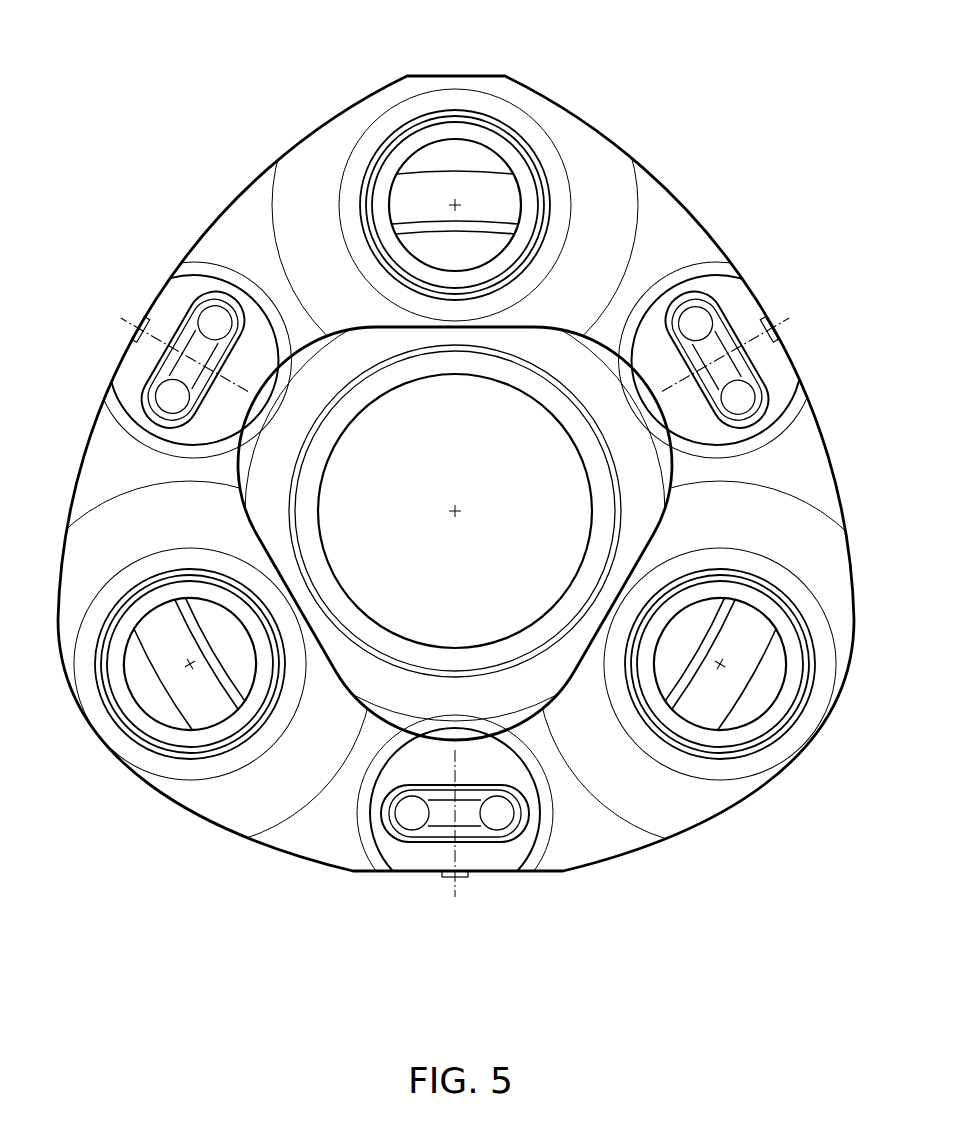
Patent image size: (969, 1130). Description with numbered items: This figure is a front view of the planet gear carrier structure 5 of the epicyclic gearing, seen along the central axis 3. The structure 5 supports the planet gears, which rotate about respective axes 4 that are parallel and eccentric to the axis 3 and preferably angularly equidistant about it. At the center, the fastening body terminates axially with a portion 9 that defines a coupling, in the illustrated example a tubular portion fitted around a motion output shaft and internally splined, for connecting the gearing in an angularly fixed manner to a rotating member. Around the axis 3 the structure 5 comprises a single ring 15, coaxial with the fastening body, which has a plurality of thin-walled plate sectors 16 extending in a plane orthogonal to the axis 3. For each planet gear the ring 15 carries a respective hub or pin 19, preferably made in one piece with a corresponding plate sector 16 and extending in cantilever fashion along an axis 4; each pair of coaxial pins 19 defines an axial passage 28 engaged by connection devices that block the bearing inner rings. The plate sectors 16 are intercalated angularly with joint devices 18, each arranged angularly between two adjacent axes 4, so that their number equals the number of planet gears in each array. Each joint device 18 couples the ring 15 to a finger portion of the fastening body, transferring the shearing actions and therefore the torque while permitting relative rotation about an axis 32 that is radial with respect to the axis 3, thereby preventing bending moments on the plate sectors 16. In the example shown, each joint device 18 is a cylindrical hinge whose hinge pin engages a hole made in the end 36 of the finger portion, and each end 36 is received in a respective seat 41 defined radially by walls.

The axis 3 is at (455, 513).
The axes 4 is at (458, 198).
The planet gear carrier structure 5 is at (548, 356).
The portion 9 is at (533, 392).
The ring 15 is at (222, 198).
The plate sectors 16 is at (590, 160).
The joint devices 18 is at (174, 320).
The pin 19 is at (502, 148).
The axial passage 28 is at (434, 152).
The axis 32 is at (133, 325).
The end 36 is at (197, 297).
The seats 41 is at (190, 398).